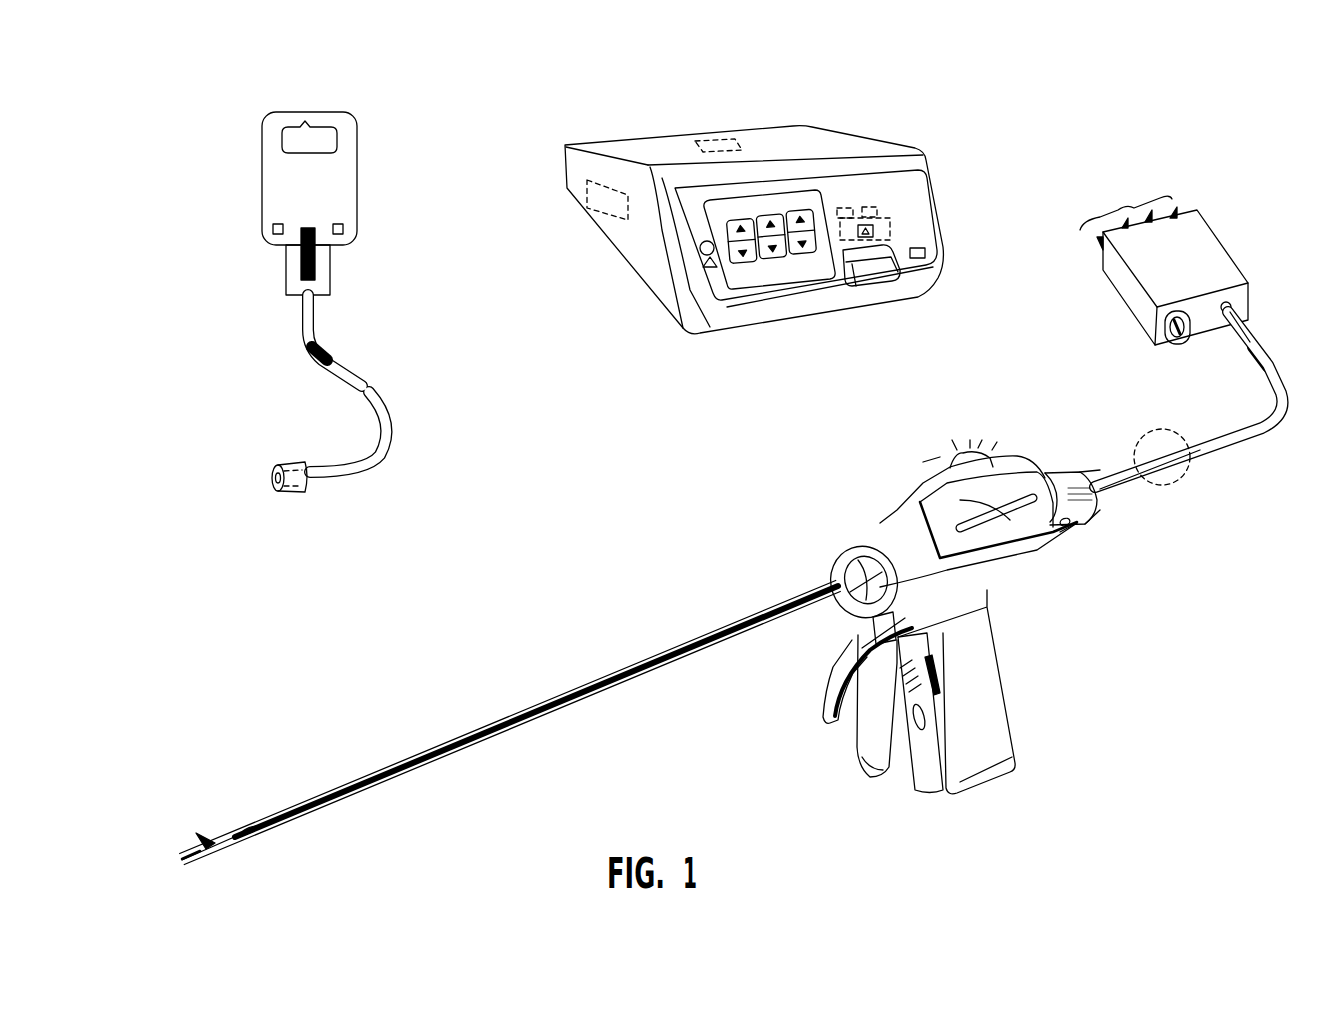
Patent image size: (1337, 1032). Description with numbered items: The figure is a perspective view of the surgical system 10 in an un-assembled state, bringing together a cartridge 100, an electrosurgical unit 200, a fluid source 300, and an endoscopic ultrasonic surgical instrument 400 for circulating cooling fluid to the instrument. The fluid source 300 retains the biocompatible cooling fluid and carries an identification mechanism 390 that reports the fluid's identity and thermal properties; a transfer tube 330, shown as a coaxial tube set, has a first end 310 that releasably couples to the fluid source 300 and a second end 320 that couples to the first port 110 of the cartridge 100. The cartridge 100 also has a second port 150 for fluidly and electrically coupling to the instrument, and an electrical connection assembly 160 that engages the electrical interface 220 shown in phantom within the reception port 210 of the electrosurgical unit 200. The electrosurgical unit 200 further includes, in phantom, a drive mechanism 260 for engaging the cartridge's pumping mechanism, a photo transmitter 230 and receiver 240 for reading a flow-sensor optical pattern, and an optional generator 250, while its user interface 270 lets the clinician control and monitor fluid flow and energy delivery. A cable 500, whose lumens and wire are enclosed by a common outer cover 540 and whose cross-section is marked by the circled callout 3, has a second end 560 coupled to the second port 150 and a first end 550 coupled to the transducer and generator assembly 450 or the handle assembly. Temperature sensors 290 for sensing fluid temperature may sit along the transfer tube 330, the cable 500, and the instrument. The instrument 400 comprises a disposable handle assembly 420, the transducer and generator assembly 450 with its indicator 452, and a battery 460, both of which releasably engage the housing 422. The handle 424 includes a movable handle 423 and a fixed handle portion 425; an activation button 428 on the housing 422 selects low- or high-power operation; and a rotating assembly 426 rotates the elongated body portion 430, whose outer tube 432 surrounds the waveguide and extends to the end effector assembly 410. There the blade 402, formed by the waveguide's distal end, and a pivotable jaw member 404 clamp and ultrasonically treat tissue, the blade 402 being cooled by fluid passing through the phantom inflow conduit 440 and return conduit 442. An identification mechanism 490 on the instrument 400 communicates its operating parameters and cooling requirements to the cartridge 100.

The surgical system 10 is at (215, 110).
The fluid source 300 is at (262, 152).
The identification mechanism 390 is at (273, 229).
The temperature sensors 290 is at (343, 229).
The first end 310 is at (286, 267).
The transfer tube 330 is at (345, 360).
The second end 320 is at (295, 493).
The electrosurgical unit 200 is at (790, 146).
The drive mechanism 260 is at (715, 135).
The generator 250 is at (585, 200).
The user interface 270 is at (712, 210).
The photo transmitter 230 is at (846, 210).
The receiver 240 is at (870, 207).
The electrical interface 220 is at (890, 228).
The reception port 210 is at (888, 252).
The cartridge 100 is at (1210, 247).
The electrical connection assembly 160 is at (1128, 210).
The first port 110 is at (1167, 322).
The second port 150 is at (1230, 300).
The cable 500 is at (1285, 400).
The second end 560 is at (1244, 313).
The common outer cover 540 is at (1210, 455).
The detail reference to FIG. 3 is at (1153, 428).
The endoscopic ultrasonic surgical instrument 400 is at (545, 548).
The elongated body portion 430 is at (440, 740).
The outer tube 432 is at (520, 715).
The end effector assembly 410 is at (226, 866).
The jaw member 404 is at (197, 833).
The blade 402 is at (185, 853).
The rotating assembly 426 is at (830, 577).
The transducer and generator assembly 450 is at (1013, 537).
The indicator 452 is at (972, 435).
The inflow conduit 440 is at (1078, 470).
The first end 550 is at (1100, 493).
The return conduit 442 is at (1097, 520).
The identification mechanism 490 is at (1080, 522).
The disposable handle assembly 420 is at (837, 620).
The activation button 428 is at (867, 623).
The movable handle 423 is at (827, 713).
The housing 422 is at (993, 627).
The fixed handle portion 425 is at (1007, 643).
The battery 460 is at (1000, 730).
The handle 424 is at (825, 808).